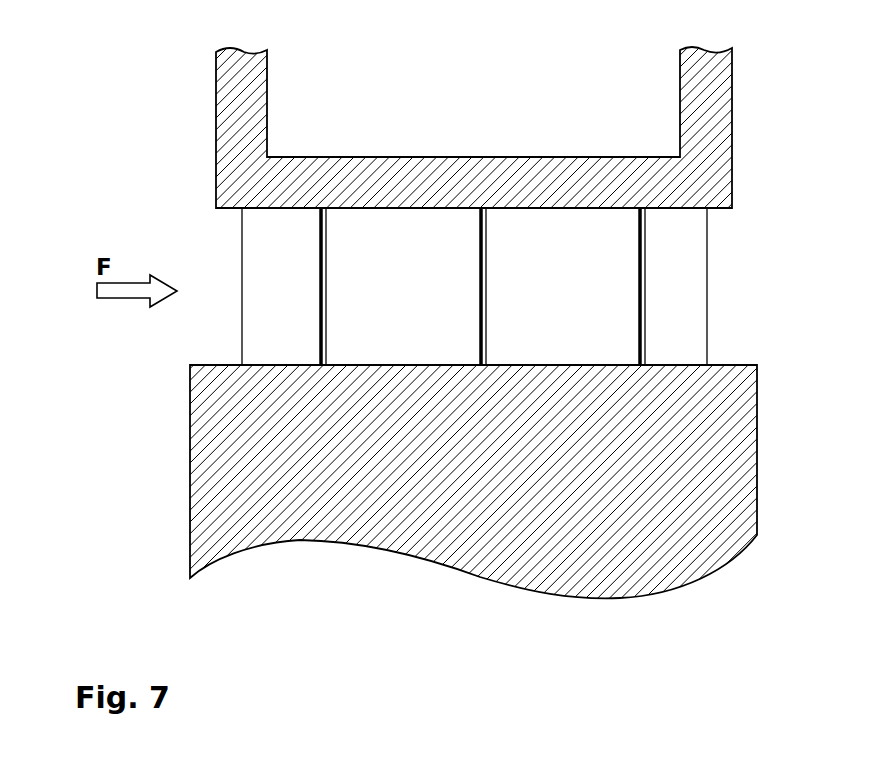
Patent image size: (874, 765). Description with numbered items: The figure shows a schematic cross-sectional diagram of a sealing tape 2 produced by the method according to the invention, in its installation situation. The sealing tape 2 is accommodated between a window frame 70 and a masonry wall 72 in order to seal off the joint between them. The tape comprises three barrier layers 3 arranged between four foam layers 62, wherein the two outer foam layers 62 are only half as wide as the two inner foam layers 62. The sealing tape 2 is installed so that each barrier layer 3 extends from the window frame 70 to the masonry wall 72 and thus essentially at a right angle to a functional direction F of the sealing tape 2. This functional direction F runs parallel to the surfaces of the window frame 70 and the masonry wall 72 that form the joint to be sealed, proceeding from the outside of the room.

The sealing tape 2 is at (537, 375).
The barrier layer 3 is at (637, 257).
The foam layer 62 is at (675, 298).
The window frame 70 is at (710, 147).
The masonry wall 72 is at (727, 485).